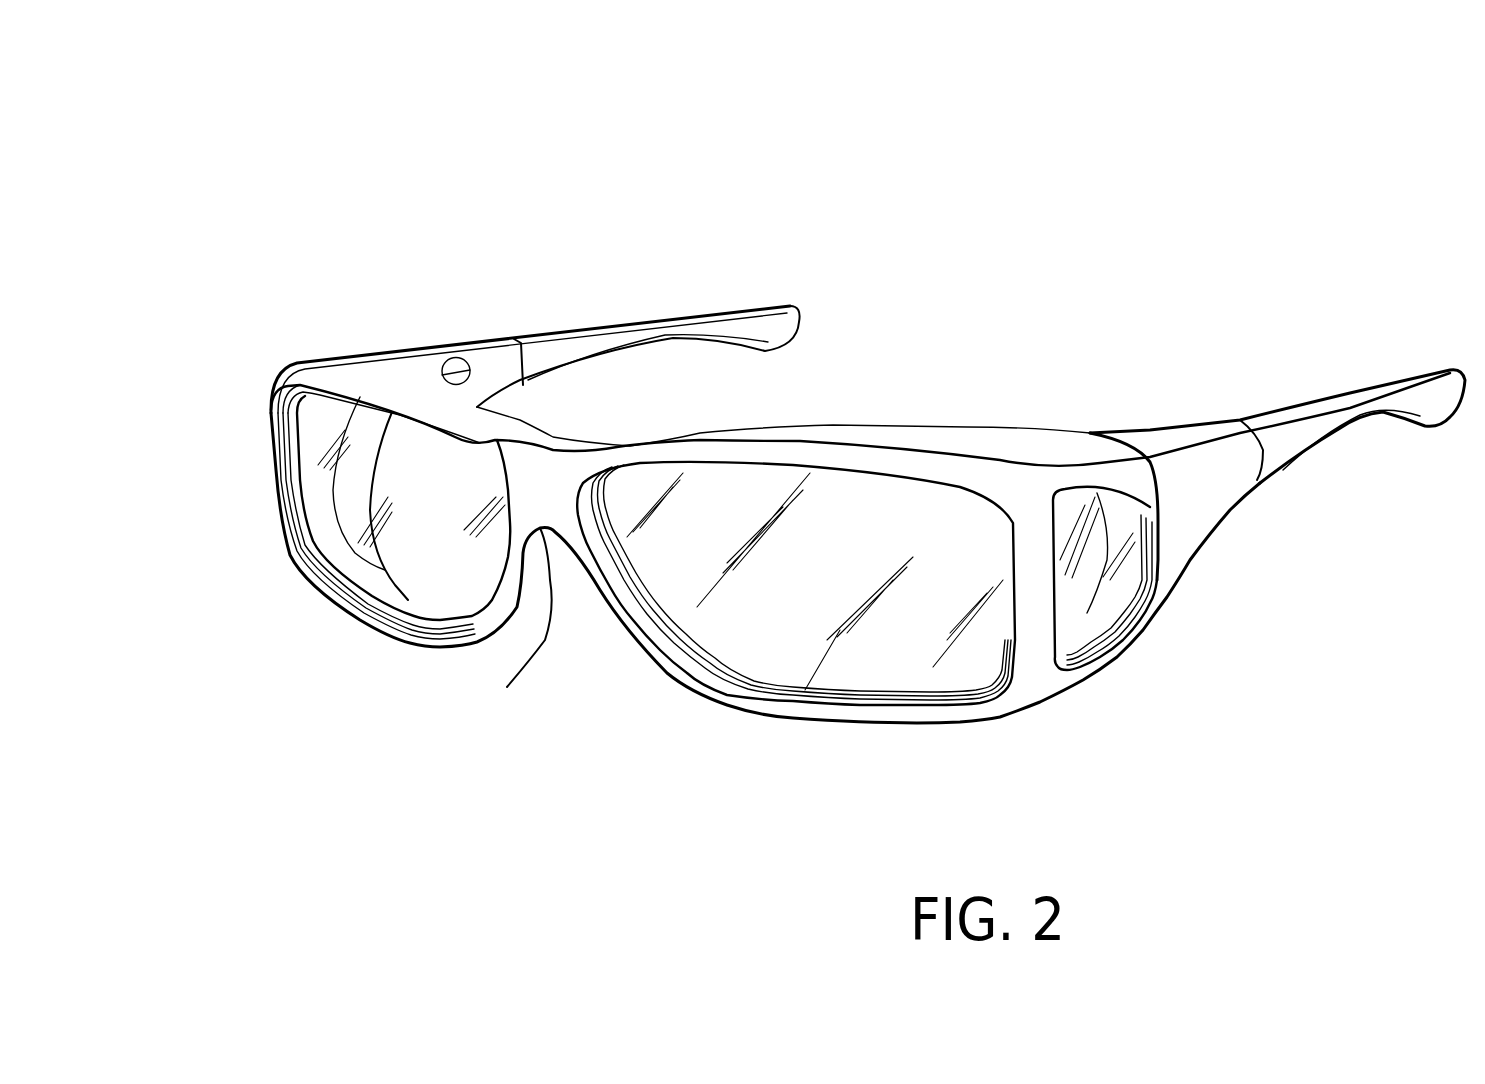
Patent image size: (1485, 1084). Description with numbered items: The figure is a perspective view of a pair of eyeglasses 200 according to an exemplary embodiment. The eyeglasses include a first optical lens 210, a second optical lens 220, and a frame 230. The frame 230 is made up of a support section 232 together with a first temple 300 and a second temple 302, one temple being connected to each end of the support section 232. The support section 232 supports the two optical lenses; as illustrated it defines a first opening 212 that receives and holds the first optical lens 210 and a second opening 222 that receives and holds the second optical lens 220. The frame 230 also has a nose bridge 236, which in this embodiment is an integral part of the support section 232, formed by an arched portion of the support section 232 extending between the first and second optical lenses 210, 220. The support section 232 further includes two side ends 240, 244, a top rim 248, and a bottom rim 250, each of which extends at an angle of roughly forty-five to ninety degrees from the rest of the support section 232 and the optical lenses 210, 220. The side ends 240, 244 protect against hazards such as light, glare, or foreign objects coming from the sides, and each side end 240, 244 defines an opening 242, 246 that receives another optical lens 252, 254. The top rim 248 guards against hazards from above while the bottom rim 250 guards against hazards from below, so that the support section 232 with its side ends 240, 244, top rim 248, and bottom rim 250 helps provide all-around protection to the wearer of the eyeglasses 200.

The pair of eyeglasses 200 is at (1322, 164).
The first optical lens 210 is at (350, 548).
The first opening 212 is at (463, 578).
The second optical lens 220 is at (780, 655).
The second opening 222 is at (755, 612).
The frame 230 is at (920, 433).
The support section 232 is at (730, 433).
The nose bridge 236 is at (550, 512).
The side end 240 is at (382, 437).
The opening 242 is at (316, 414).
The side end 244 is at (1147, 595).
The opening 246 is at (1078, 587).
The top rim 248 is at (1037, 443).
The bottom rim 250 is at (375, 505).
The optical lens 252 is at (1097, 542).
The optical lens 254 is at (330, 477).
The first temple 300 is at (1398, 385).
The second temple 302 is at (668, 327).